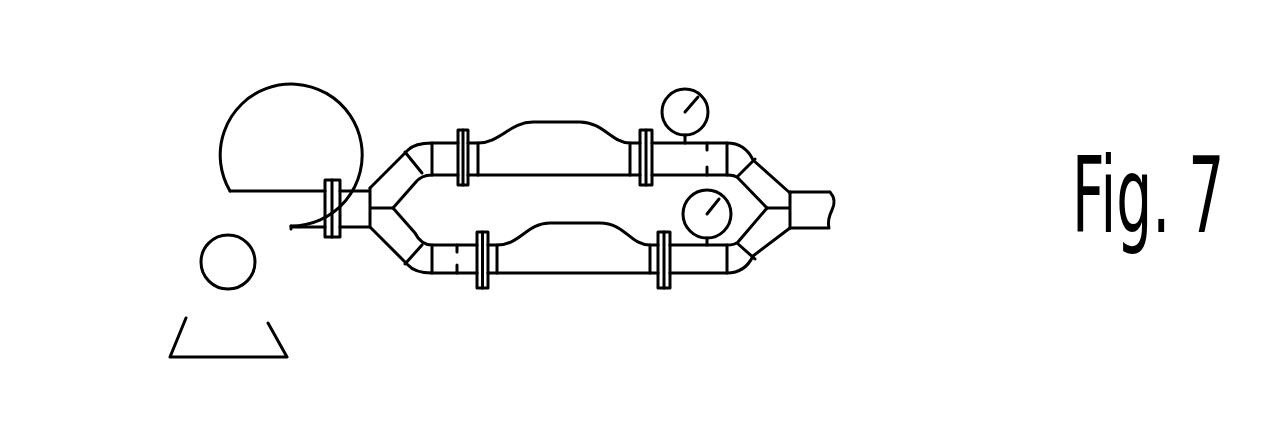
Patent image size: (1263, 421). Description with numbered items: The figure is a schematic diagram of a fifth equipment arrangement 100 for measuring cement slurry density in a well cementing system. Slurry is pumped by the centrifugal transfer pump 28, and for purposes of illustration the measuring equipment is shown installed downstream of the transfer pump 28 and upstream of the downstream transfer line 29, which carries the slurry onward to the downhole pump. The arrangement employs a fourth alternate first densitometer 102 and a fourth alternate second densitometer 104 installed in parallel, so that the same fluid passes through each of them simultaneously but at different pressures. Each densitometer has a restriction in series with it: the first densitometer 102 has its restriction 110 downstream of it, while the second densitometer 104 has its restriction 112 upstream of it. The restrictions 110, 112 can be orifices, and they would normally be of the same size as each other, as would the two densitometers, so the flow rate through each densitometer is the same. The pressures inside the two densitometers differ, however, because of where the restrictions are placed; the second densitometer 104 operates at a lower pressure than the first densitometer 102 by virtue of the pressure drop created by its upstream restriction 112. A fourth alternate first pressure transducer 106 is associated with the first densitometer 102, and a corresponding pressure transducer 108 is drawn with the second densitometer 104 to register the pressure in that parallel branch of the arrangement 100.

The centrifugal transfer pump 28 is at (203, 191).
The downstream transfer line 29 is at (813, 228).
The fifth equipment arrangement 100 is at (801, 144).
The fourth alternate first densitometer 102 is at (553, 122).
The fourth alternate second densitometer 104 is at (578, 275).
The fourth alternate first pressure transducer 106 is at (690, 89).
The second pressure gauge 108 is at (728, 223).
The restriction 110 is at (707, 143).
The restriction 112 is at (455, 275).